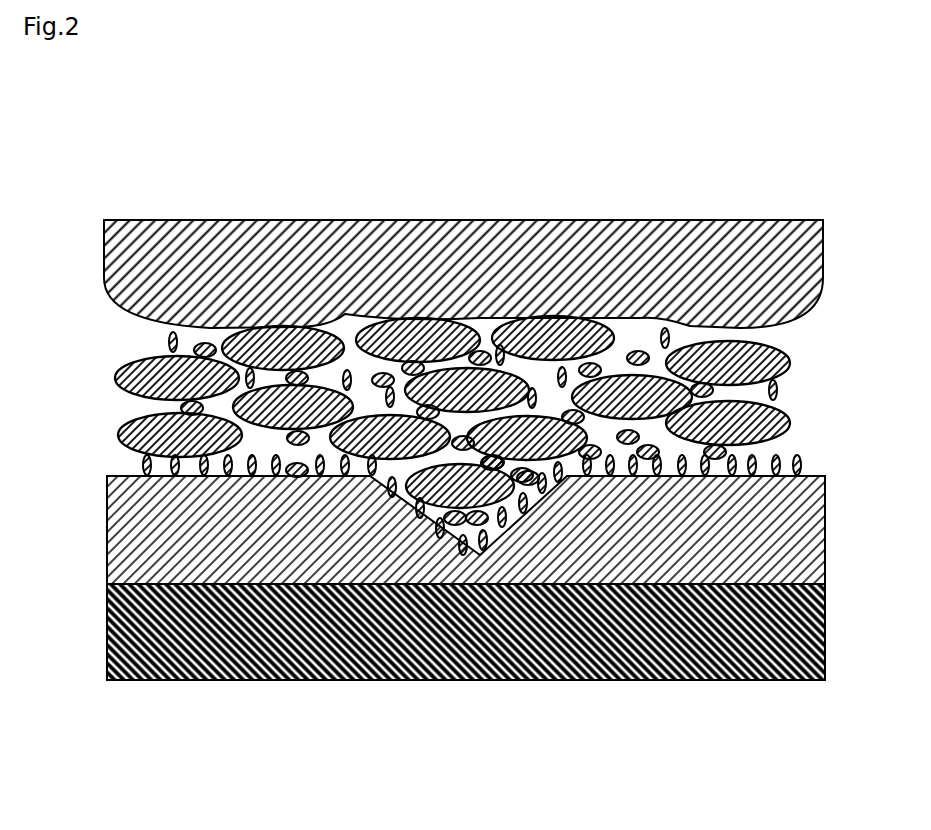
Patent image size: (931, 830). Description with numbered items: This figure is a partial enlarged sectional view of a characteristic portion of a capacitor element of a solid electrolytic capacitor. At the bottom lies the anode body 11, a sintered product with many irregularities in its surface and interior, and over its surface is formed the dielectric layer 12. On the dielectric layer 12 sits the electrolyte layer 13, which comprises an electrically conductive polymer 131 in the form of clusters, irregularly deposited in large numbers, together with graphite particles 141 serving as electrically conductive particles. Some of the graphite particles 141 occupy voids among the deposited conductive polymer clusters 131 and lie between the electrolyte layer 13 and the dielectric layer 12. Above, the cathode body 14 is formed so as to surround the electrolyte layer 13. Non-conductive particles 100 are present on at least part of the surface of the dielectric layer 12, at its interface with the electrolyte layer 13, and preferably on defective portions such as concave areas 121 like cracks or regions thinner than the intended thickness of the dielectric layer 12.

The anode body 11 is at (278, 680).
The dielectric layer 12 is at (128, 514).
The concave areas 121 is at (505, 520).
The electrolyte layer 13 is at (105, 397).
The electrically conductive polymer 131 is at (395, 325).
The cathode body 14 is at (235, 250).
The graphite particles 141 is at (640, 352).
The non-conductive particles 100 is at (493, 350).